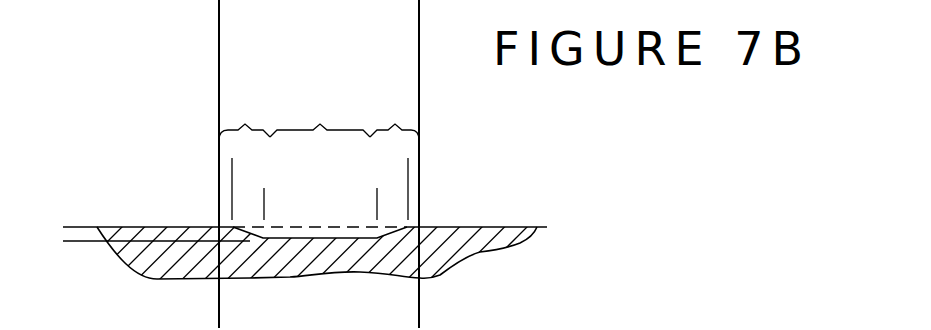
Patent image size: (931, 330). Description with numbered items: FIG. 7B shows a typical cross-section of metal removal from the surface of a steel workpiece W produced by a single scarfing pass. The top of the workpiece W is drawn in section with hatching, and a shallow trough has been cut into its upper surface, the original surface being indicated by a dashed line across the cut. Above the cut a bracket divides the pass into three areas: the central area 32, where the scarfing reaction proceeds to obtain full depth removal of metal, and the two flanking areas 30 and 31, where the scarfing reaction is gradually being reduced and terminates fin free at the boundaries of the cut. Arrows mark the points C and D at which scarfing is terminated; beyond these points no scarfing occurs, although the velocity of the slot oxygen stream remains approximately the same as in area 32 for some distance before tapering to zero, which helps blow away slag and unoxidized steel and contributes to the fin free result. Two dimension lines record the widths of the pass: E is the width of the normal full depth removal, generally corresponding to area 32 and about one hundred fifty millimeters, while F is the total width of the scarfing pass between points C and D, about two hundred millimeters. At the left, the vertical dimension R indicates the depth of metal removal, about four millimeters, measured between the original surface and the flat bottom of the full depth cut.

The area of reducing scarfing reaction 30 is at (244, 121).
The area of reducing scarfing reaction 31 is at (394, 121).
The full depth removal area 32 is at (320, 119).
The workpiece W is at (458, 226).
The scarfing termination point C is at (232, 86).
The scarfing termination point D is at (406, 86).
The width of normal full depth removal E is at (377, 208).
The total width of scarfing pass F is at (408, 176).
The metal removal depth R is at (83, 202).